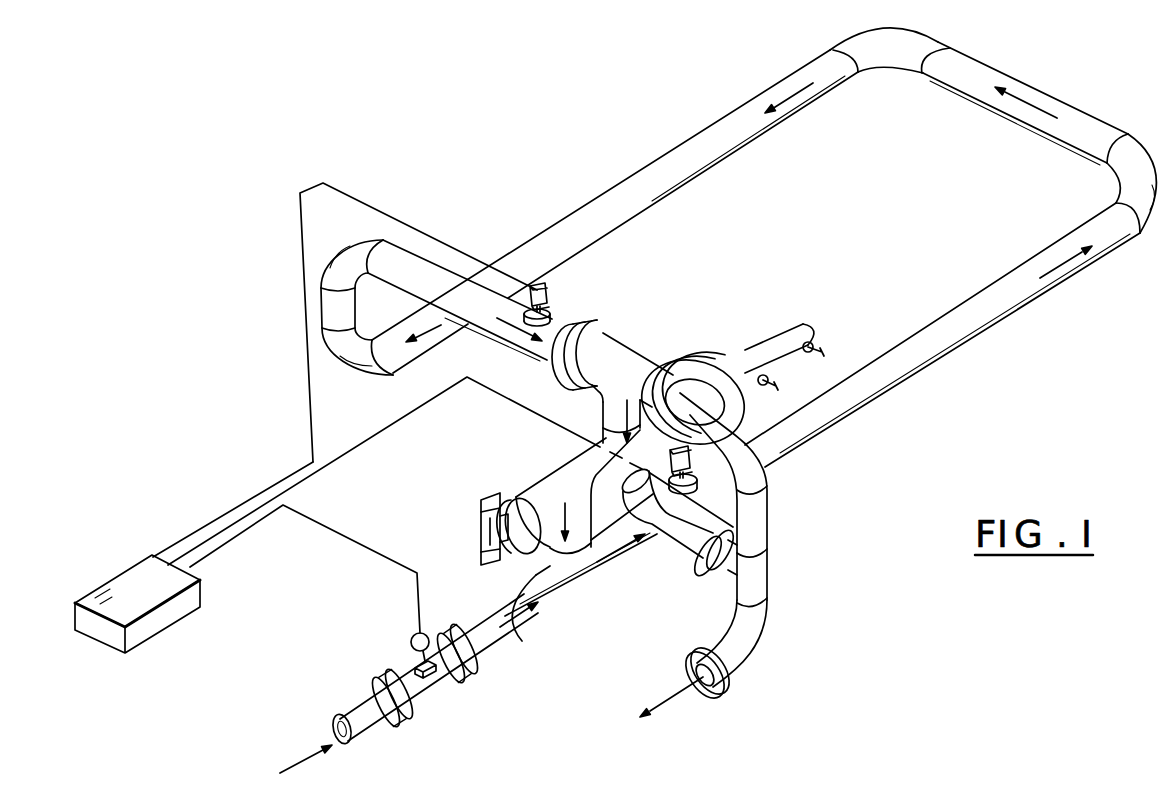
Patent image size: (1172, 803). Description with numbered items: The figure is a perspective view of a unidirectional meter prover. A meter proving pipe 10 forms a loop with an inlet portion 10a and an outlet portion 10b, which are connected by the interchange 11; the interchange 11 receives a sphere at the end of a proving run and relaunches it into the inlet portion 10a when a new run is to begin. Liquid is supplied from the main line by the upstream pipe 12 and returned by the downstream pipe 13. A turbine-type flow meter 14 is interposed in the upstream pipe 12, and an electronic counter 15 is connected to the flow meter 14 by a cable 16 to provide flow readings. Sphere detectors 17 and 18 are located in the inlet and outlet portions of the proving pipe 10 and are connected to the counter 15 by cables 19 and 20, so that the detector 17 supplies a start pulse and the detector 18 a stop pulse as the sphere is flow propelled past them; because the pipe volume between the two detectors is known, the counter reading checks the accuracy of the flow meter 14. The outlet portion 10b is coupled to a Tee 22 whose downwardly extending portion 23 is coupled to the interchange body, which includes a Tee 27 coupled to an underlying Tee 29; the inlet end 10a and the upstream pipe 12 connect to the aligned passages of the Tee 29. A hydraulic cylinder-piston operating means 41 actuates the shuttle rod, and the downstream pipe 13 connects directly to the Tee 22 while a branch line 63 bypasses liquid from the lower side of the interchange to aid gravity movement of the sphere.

The meter proving pipe 10 is at (1068, 100).
The inlet portion 10a is at (657, 548).
The outlet portion 10b is at (555, 318).
The interchange 11 is at (692, 357).
The upstream pipe 12 is at (503, 648).
The downstream pipe 13 is at (750, 652).
The flow meter 14 is at (415, 669).
The electronic counter 15 is at (130, 584).
The cable 16 is at (375, 551).
The sphere detector 17 is at (700, 470).
The sphere detector 18 is at (550, 290).
The cable 19 is at (440, 395).
The cable 20 is at (310, 388).
The Tee 22 is at (617, 352).
The downwardly extending portion 23 is at (617, 397).
The Tee 27 is at (571, 478).
The Tee 29 is at (578, 600).
The operating means 41 is at (776, 337).
The branch line 63 is at (695, 550).